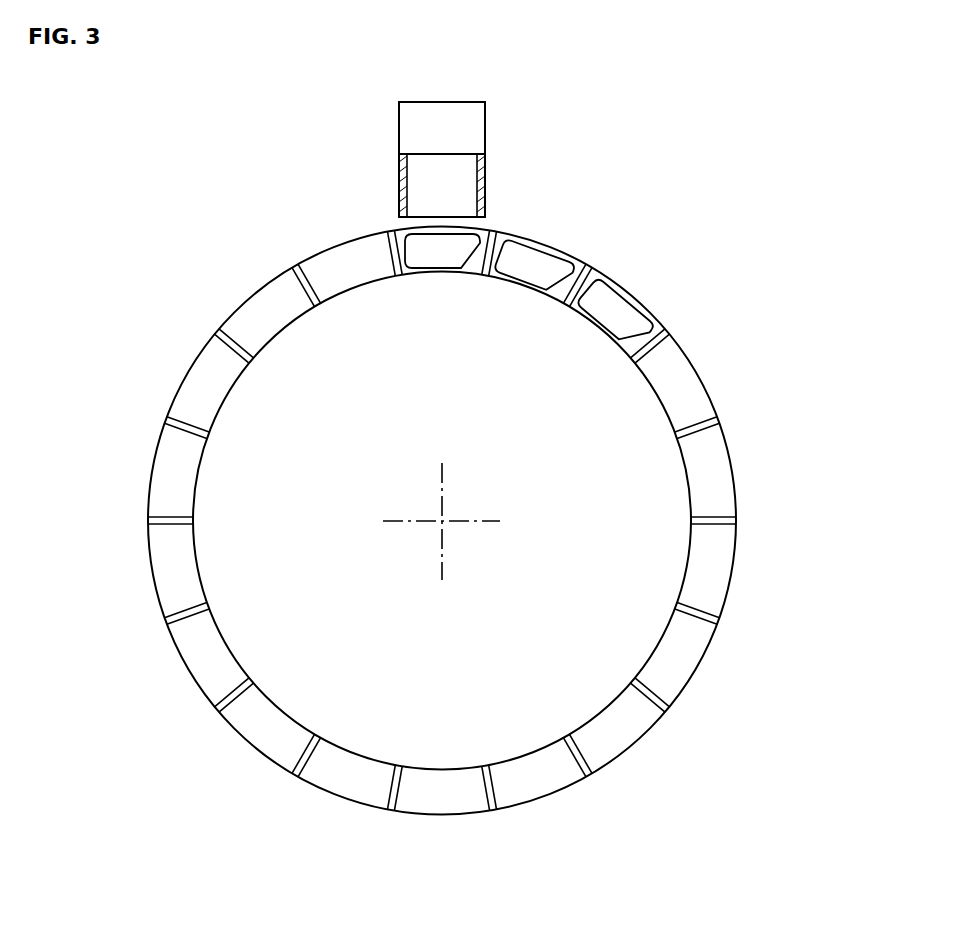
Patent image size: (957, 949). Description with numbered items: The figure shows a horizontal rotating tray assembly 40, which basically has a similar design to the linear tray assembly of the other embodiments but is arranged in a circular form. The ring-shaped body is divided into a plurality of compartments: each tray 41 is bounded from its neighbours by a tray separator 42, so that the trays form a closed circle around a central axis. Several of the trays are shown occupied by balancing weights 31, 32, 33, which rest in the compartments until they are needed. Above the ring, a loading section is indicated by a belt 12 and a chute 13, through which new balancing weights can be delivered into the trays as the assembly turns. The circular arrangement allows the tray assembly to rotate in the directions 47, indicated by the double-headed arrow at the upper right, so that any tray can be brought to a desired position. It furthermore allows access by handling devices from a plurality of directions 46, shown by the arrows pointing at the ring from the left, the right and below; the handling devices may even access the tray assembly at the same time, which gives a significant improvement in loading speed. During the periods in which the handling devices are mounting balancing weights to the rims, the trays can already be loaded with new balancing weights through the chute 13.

The belt 12 is at (470, 123).
The chute 13 is at (470, 190).
The balancing weight 31 is at (440, 254).
The balancing weight 32 is at (532, 266).
The balancing weight 33 is at (614, 313).
The horizontal rotating tray assembly 40 is at (757, 394).
The tray 41 is at (442, 521).
The tray separator 42 is at (707, 565).
The access by handling devices 46 is at (108, 521).
The direction of rotation 47 is at (683, 268).